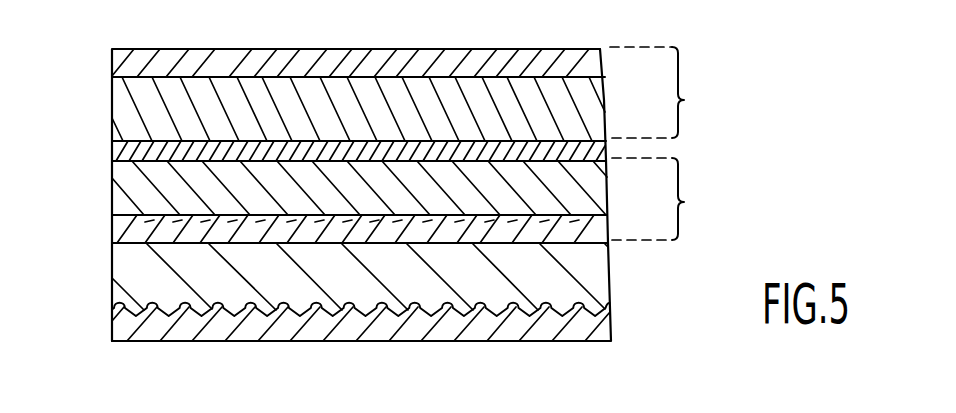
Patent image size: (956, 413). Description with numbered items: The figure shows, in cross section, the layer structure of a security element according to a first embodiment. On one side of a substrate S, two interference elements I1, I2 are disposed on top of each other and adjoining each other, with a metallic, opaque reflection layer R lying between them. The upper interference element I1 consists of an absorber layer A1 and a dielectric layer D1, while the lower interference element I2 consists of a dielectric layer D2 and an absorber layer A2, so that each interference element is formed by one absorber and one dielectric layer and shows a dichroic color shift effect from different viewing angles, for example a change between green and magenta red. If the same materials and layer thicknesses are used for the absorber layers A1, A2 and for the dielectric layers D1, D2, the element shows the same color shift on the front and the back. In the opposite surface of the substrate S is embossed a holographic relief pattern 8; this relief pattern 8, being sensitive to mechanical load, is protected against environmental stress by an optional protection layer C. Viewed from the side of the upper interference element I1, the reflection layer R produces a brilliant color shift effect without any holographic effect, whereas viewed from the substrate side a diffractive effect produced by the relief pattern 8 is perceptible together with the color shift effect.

The absorber layer A1 is at (133, 67).
The dielectric layer D1 is at (147, 117).
The reflection layer R is at (133, 151).
The dielectric layer D2 is at (138, 183).
The absorber layer A2 is at (127, 228).
The substrate S is at (592, 267).
The protection layer C is at (588, 326).
The holographic relief pattern 8 is at (448, 310).
The first interference element I1 is at (661, 92).
The second interference element I2 is at (662, 199).